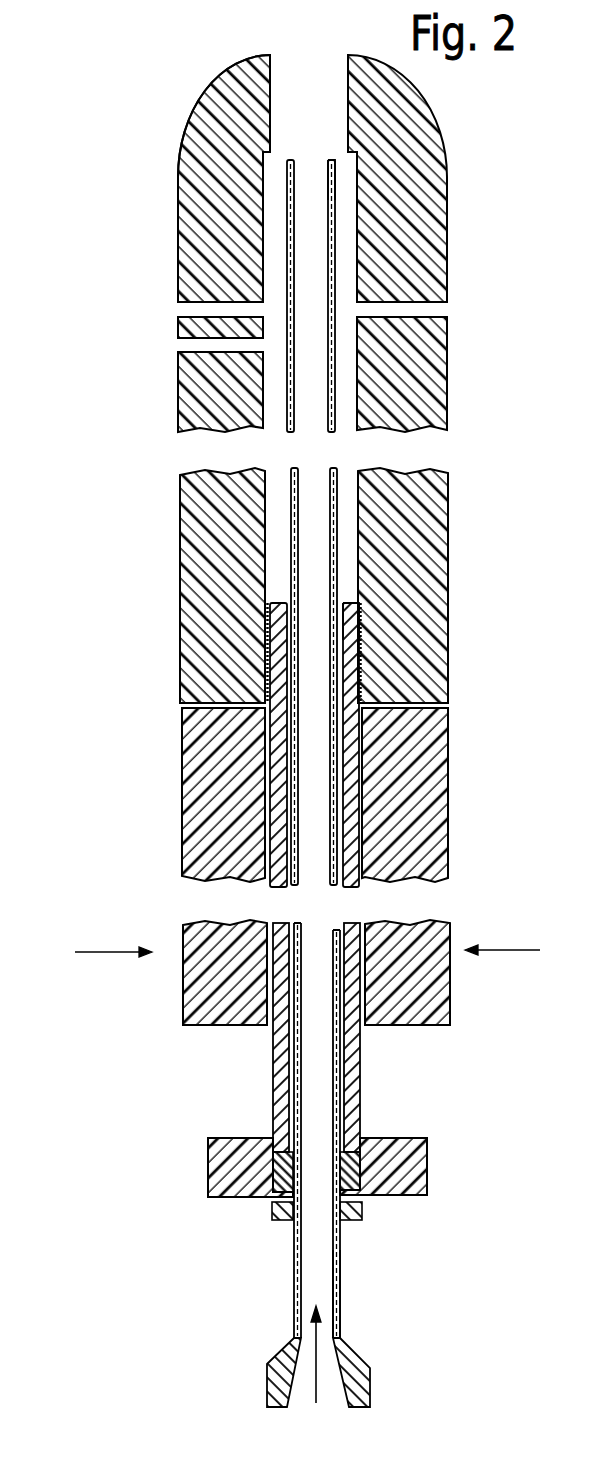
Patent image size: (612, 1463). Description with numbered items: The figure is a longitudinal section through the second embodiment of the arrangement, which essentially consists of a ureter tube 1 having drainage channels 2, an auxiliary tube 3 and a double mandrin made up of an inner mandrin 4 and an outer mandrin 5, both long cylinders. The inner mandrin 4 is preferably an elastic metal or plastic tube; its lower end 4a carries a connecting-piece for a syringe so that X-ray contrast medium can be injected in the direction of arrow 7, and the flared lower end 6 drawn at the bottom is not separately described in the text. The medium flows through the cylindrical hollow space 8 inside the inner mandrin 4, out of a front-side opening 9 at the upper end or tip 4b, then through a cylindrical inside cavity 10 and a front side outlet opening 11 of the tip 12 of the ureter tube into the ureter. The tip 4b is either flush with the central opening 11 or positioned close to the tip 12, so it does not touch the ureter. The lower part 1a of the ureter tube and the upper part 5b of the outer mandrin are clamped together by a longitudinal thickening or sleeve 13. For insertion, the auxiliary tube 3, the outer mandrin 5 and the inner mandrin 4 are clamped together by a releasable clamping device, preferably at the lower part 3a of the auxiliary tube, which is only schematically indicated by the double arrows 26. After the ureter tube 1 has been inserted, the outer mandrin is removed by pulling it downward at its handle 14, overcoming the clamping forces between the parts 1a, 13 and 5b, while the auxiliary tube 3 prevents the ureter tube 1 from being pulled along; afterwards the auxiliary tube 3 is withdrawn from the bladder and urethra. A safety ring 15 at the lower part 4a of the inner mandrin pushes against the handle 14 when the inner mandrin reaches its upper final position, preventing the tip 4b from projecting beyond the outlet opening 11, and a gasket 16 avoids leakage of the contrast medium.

The ureter tube 1 is at (177, 238).
The lower part of the ureter tube 1a is at (215, 683).
The drainage channels 2 is at (190, 310).
The auxiliary tube 3 is at (185, 732).
The lower part of the auxiliary tube 3a is at (180, 992).
The inner mandrin 4 is at (335, 237).
The lower end of the inner mandrin 4a is at (342, 1303).
The upper end or tip of the inner mandrin 4b is at (335, 170).
The outer mandrin 5 is at (360, 1080).
The upper part of the outer mandrin 5b is at (358, 604).
The right flared foot 6 is at (372, 1372).
The arrow 7 is at (315, 1378).
The cylindrical hollow space 8 is at (315, 1082).
The front-side opening 9 is at (311, 170).
The cylindrical inside cavity 10 is at (330, 117).
The front side outlet opening 11 is at (307, 70).
The tip of the ureter tube 12 is at (218, 88).
The longitudinal thickening or sleeve 13 is at (265, 632).
The handle 14 is at (222, 1165).
The safety ring 15 is at (365, 1210).
The gasket 16 is at (362, 1155).
The double arrows 26 is at (308, 955).